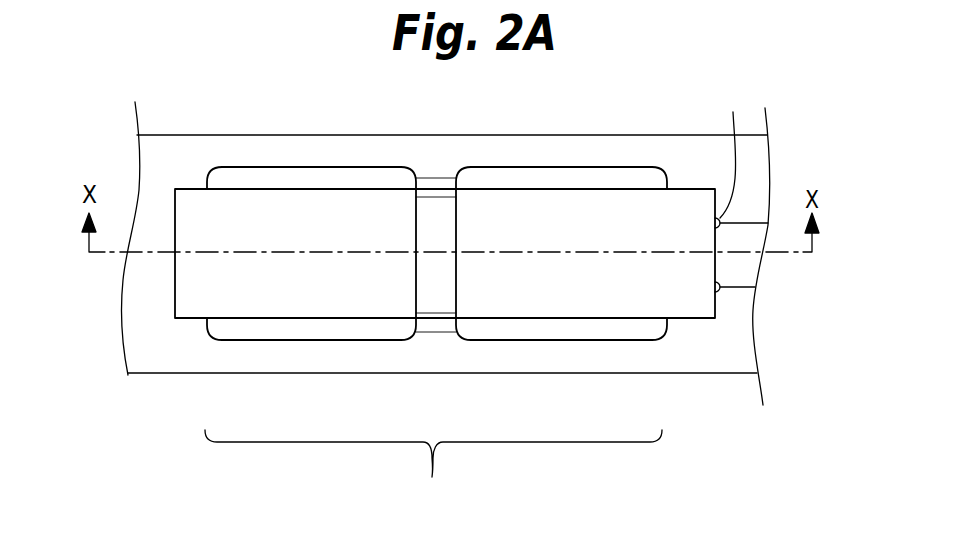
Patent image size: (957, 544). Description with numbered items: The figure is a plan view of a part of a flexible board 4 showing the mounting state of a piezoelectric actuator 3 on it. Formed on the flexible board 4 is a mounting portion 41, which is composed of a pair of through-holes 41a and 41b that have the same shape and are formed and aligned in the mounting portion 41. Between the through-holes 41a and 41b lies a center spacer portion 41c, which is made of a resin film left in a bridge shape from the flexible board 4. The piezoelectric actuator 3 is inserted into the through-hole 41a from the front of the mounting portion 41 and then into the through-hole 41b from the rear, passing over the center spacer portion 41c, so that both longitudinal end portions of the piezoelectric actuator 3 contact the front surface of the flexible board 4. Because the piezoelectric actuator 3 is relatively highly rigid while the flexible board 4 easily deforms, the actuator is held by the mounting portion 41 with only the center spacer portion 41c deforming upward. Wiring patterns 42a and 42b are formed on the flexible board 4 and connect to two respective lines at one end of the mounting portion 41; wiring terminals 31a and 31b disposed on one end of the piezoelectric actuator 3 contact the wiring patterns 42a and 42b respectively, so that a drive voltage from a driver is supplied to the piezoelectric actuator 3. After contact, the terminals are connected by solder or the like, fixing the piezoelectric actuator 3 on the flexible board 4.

The piezoelectric actuator 3 is at (568, 297).
The flexible board 4 is at (680, 363).
The wiring terminal 31a is at (736, 158).
The wiring terminal 31b is at (720, 283).
The mounting portion 41 is at (433, 468).
The through-hole 41a is at (253, 340).
The through-hole 41b is at (517, 340).
The center spacer portion 41c is at (405, 265).
The wiring pattern 42a is at (751, 223).
The wiring pattern 42b is at (738, 290).